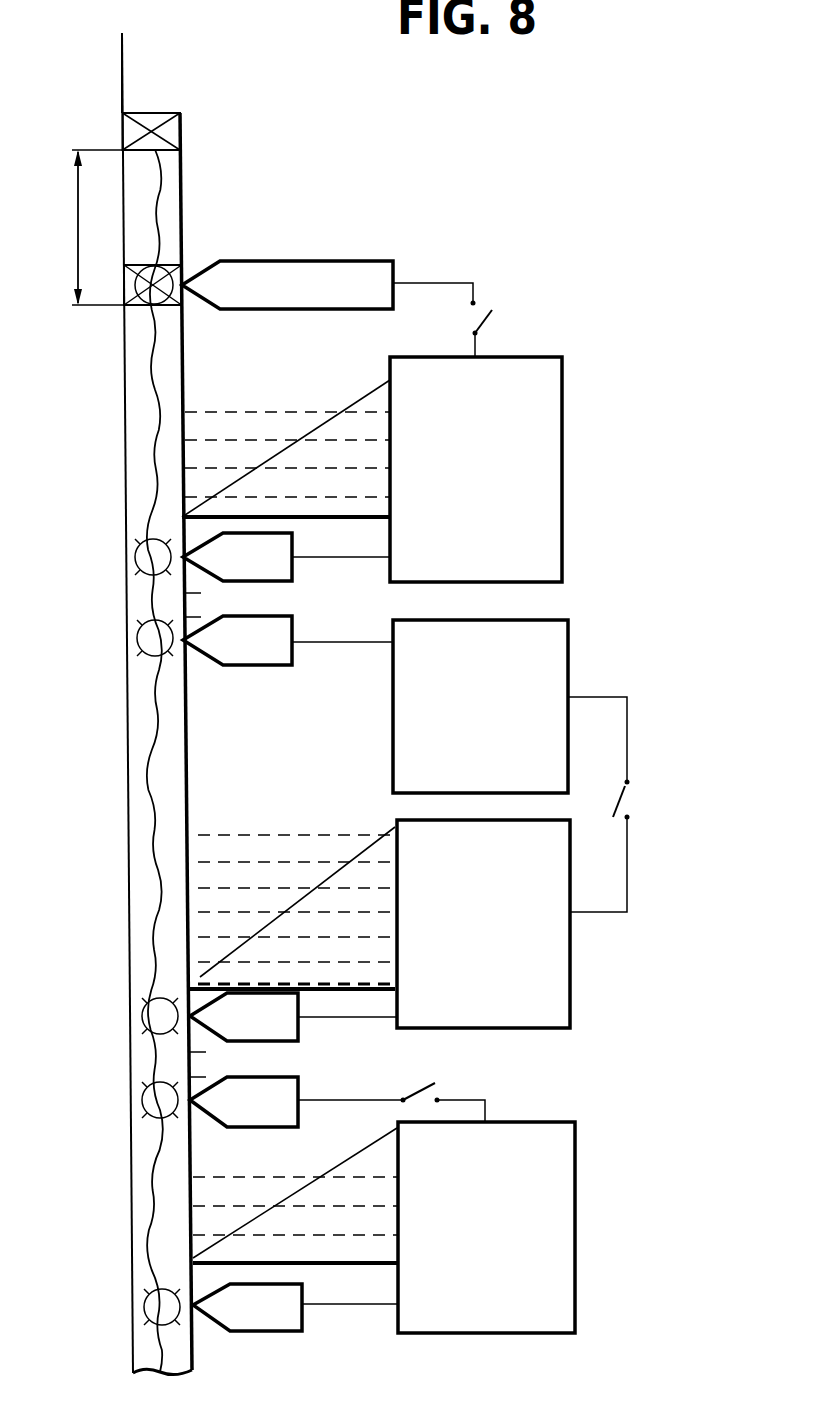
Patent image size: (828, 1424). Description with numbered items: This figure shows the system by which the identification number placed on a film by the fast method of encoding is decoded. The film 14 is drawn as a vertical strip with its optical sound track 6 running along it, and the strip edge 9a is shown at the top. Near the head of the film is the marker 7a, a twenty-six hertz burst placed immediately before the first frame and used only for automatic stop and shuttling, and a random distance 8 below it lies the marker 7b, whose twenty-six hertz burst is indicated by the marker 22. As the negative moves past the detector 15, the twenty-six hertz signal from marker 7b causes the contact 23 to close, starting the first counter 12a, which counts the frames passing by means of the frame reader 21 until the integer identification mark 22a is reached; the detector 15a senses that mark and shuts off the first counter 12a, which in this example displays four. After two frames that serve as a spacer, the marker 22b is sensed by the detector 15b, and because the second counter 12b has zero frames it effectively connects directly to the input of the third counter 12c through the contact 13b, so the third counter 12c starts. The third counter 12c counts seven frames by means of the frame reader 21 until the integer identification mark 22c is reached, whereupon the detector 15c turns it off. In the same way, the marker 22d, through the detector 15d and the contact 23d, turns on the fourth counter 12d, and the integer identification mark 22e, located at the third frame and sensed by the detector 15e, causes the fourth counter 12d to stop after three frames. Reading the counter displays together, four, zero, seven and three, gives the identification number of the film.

The optical sound track 6 is at (157, 368).
The marker 7a is at (175, 128).
The marker 7b is at (178, 262).
The random distance 8 is at (78, 227).
The strip edge 9a is at (118, 78).
The counter #1 12a is at (552, 402).
The counter #2 12b is at (560, 638).
The counter #3 12c is at (567, 979).
The counter #4 12d is at (565, 1175).
The contact 13b is at (629, 800).
The film 14 is at (118, 779).
The detector 15 is at (327, 265).
The detector 15a is at (293, 573).
The detector 15b is at (297, 629).
The detector 15c is at (300, 1035).
The detector 15d is at (290, 1088).
The detector 15e is at (290, 1325).
The frame reader 21 is at (365, 400).
The marker 22 is at (150, 297).
The integer identification mark 22a is at (140, 552).
The marker 22b is at (143, 636).
The integer identification mark 22c is at (143, 1018).
The marker 22d is at (143, 1100).
The integer identification mark 22e is at (150, 1312).
The contact 23 is at (470, 324).
The contact 23d is at (457, 1078).